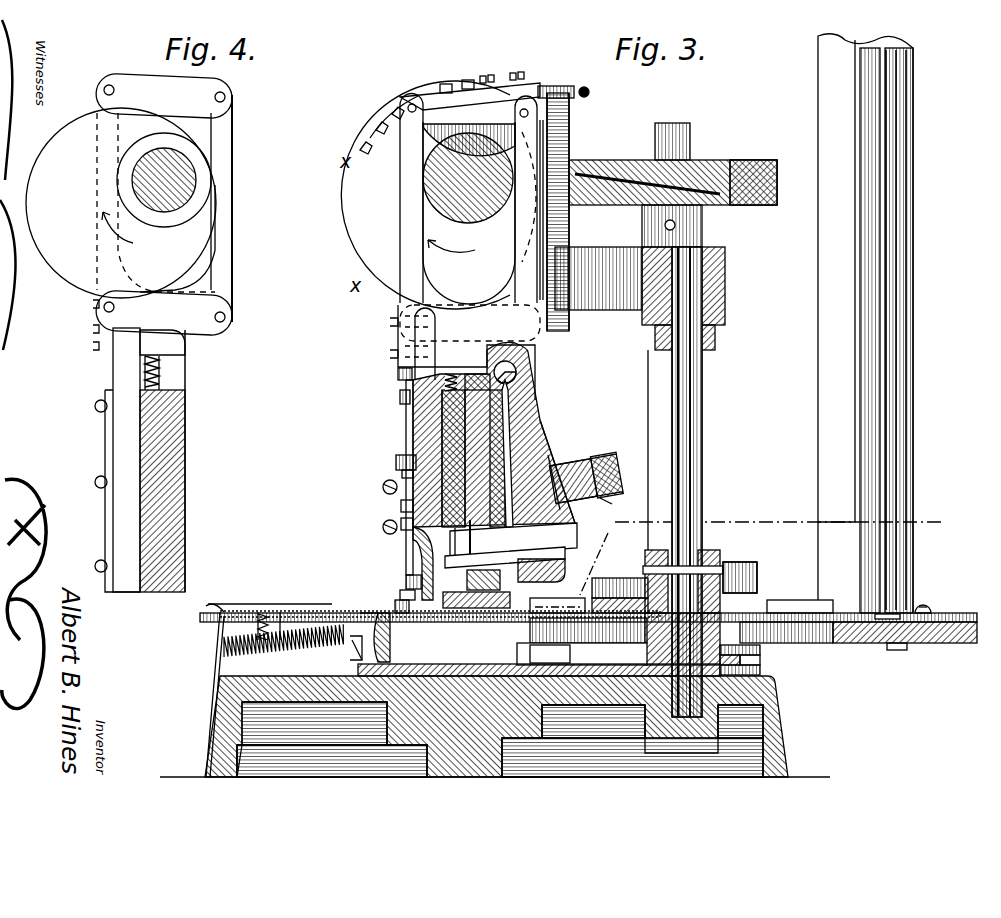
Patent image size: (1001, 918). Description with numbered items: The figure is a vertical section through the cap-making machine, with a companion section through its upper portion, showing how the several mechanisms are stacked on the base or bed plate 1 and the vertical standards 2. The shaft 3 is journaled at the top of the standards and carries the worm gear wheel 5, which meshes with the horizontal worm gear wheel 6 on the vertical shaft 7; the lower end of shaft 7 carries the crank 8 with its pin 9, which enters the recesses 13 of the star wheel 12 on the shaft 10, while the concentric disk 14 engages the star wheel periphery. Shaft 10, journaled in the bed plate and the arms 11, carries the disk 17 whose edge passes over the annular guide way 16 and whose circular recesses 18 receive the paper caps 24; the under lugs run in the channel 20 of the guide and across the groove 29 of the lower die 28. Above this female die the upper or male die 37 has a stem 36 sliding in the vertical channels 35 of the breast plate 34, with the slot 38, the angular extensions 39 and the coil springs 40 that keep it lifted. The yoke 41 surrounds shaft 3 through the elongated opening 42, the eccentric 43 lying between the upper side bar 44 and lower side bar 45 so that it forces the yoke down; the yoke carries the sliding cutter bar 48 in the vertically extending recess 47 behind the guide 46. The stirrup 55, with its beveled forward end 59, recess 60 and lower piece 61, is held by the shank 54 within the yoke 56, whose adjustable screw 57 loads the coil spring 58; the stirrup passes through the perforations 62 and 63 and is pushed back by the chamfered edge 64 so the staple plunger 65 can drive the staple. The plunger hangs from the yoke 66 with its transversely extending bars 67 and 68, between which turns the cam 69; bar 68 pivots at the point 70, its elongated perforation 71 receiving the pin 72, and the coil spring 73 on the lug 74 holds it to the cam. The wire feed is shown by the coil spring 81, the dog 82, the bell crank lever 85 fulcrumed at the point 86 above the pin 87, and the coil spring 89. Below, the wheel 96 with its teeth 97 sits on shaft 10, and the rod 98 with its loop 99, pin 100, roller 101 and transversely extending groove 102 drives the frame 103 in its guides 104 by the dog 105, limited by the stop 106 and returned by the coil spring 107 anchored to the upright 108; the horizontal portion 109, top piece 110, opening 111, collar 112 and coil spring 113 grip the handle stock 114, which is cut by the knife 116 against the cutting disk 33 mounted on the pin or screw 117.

In FIG. 3, the base or bed plate 1 is at (770, 718).
In FIG. 3, the vertical standards 2 is at (528, 365).
In FIG. 4, the shaft 3 is at (190, 186).
In FIG. 3, the shaft 3 is at (468, 192).
In FIG. 3, the worm gear wheel 5 is at (462, 84).
In FIG. 3, the horizontal worm gear wheel 6 is at (673, 171).
In FIG. 3, the vertical shaft 7 is at (692, 136).
In FIG. 3, the crank 8 is at (645, 578).
In FIG. 3, the pin 9 is at (757, 582).
In FIG. 3, the shaft 10 is at (703, 440).
In FIG. 3, the arms 11 is at (612, 312).
In FIG. 3, the star wheel 12 is at (582, 654).
In FIG. 3, the recesses 13 is at (575, 606).
In FIG. 3, the concentric disk 14 is at (600, 596).
In FIG. 3, the annular guide way 16 is at (960, 622).
In FIG. 3, the disk 17 is at (815, 620).
In FIG. 3, the circular recesses 18 is at (930, 608).
In FIG. 3, the channel 20 is at (897, 650).
In FIG. 3, the paper caps 24 is at (913, 455).
In FIG. 3, the lower die 28 is at (455, 664).
In FIG. 3, the groove or channel 29 is at (557, 655).
In FIG. 3, the cutting disk 33 is at (376, 637).
In FIG. 4, the breast plate 34 is at (186, 474).
In FIG. 3, the breast plate 34 is at (455, 446).
In FIG. 3, the vertical channels 35 is at (442, 420).
In FIG. 3, the stem 36 is at (515, 440).
In FIG. 3, the upper or male die 37 is at (510, 603).
In FIG. 3, the slot or perforation 38 is at (480, 522).
In FIG. 4, the angular extensions 39 is at (150, 347).
In FIG. 4, the coil springs 40 is at (160, 378).
In FIG. 4, the yoke 41 is at (220, 276).
In FIG. 4, the elongated opening 42 is at (210, 255).
In FIG. 4, the eccentric 43 is at (68, 260).
In FIG. 4, the upper side bar 44 is at (205, 102).
In FIG. 4, the lower side bar 45 is at (205, 316).
In FIG. 4, the guide 46 is at (108, 452).
In FIG. 3, the vertically extending recess 47 is at (407, 430).
In FIG. 4, the sliding cutter bar 48 is at (96, 398).
In FIG. 3, the sliding cutter bar 48 is at (376, 531).
In FIG. 3, the shank 54 is at (558, 510).
In FIG. 3, the stirrup 55 is at (513, 540).
In FIG. 3, the yoke 56 is at (558, 462).
In FIG. 3, the adjustable screw 57 is at (596, 474).
In FIG. 3, the coil spring 58 is at (619, 505).
In FIG. 3, the beveled forward end 59 is at (455, 530).
In FIG. 3, the recess 60 is at (420, 562).
In FIG. 3, the lower piece 61 is at (594, 564).
In FIG. 3, the perforation 62 is at (500, 560).
In FIG. 3, the perforation 63 is at (401, 506).
In FIG. 3, the chamfered edge 64 is at (418, 576).
In FIG. 4, the staple plunger 65 is at (122, 382).
In FIG. 3, the staple plunger 65 is at (376, 488).
In FIG. 3, the yoke 66 is at (408, 276).
In FIG. 3, the transversely extending bar 67 is at (500, 306).
In FIG. 3, the transversely extending bar 68 is at (492, 101).
In FIG. 3, the cam 69 is at (438, 195).
In FIG. 3, the pivot point 70 is at (406, 104).
In FIG. 3, the elongated perforation 71 is at (552, 90).
In FIG. 3, the pin 72 is at (518, 113).
In FIG. 3, the coil spring 73 is at (568, 140).
In FIG. 3, the lug 74 is at (590, 81).
In FIG. 3, the coil spring 81 is at (398, 524).
In FIG. 3, the dog 82 is at (410, 545).
In FIG. 3, the bell crank lever 85 is at (400, 398).
In FIG. 3, the fulcrum point 86 is at (398, 376).
In FIG. 3, the pin 87 is at (396, 462).
In FIG. 3, the coil spring 89 is at (402, 476).
In FIG. 3, the wheel 96 is at (760, 666).
In FIG. 3, the teeth 97 is at (628, 668).
In FIG. 3, the rod 98 is at (580, 668).
In FIG. 3, the loop 99 is at (760, 672).
In FIG. 3, the pin 100 is at (760, 652).
In FIG. 3, the roller 101 is at (760, 660).
In FIG. 3, the transversely extending groove 102 is at (358, 625).
In FIG. 3, the frame 103 is at (330, 612).
In FIG. 3, the guides 104 is at (283, 649).
In FIG. 3, the dog 105 is at (368, 612).
In FIG. 3, the stop 106 is at (350, 652).
In FIG. 3, the coil spring 107 is at (318, 606).
In FIG. 3, the upright 108 is at (219, 645).
In FIG. 3, the horizontal portion 109 is at (262, 612).
In FIG. 3, the top piece 110 is at (246, 612).
In FIG. 3, the transversely extending opening 111 is at (282, 614).
In FIG. 3, the collar 112 is at (290, 610).
In FIG. 3, the coil spring 113 is at (232, 622).
In FIG. 3, the handle stock 114 is at (206, 606).
In FIG. 3, the knife 116 is at (398, 604).
In FIG. 3, the pin or screw 117 is at (430, 612).